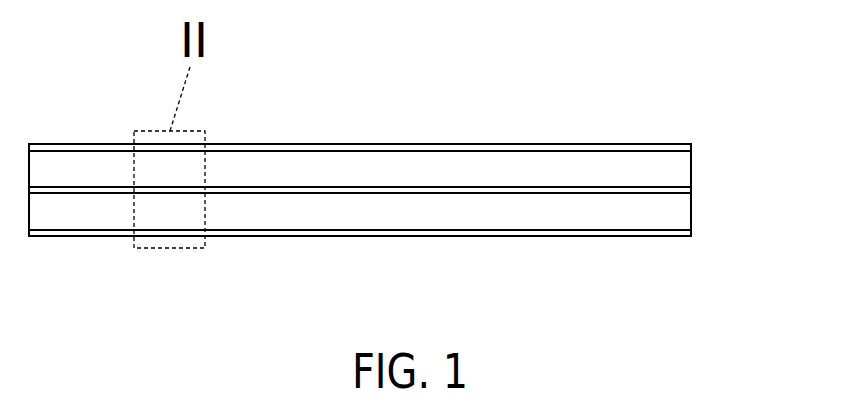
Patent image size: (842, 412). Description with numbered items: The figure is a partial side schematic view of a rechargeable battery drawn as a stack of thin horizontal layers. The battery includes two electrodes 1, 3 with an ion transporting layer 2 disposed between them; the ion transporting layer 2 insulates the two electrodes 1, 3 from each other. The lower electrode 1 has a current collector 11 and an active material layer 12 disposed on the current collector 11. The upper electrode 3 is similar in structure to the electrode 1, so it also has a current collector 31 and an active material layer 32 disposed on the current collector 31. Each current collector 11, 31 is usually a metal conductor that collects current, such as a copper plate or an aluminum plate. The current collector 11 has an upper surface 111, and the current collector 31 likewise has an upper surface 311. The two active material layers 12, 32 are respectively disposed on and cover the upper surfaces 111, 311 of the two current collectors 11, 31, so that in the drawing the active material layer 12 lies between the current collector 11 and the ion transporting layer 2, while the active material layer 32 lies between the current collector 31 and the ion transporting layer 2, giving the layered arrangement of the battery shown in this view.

The electrode 1 is at (409, 252).
The current collector 11 is at (390, 263).
The upper surface 111 is at (620, 230).
The active material layer 12 is at (686, 213).
The ion transporting layer 2 is at (687, 190).
The electrode 3 is at (409, 130).
The current collector 31 is at (390, 119).
The upper surface 311 is at (620, 152).
The active material layer 32 is at (390, 164).